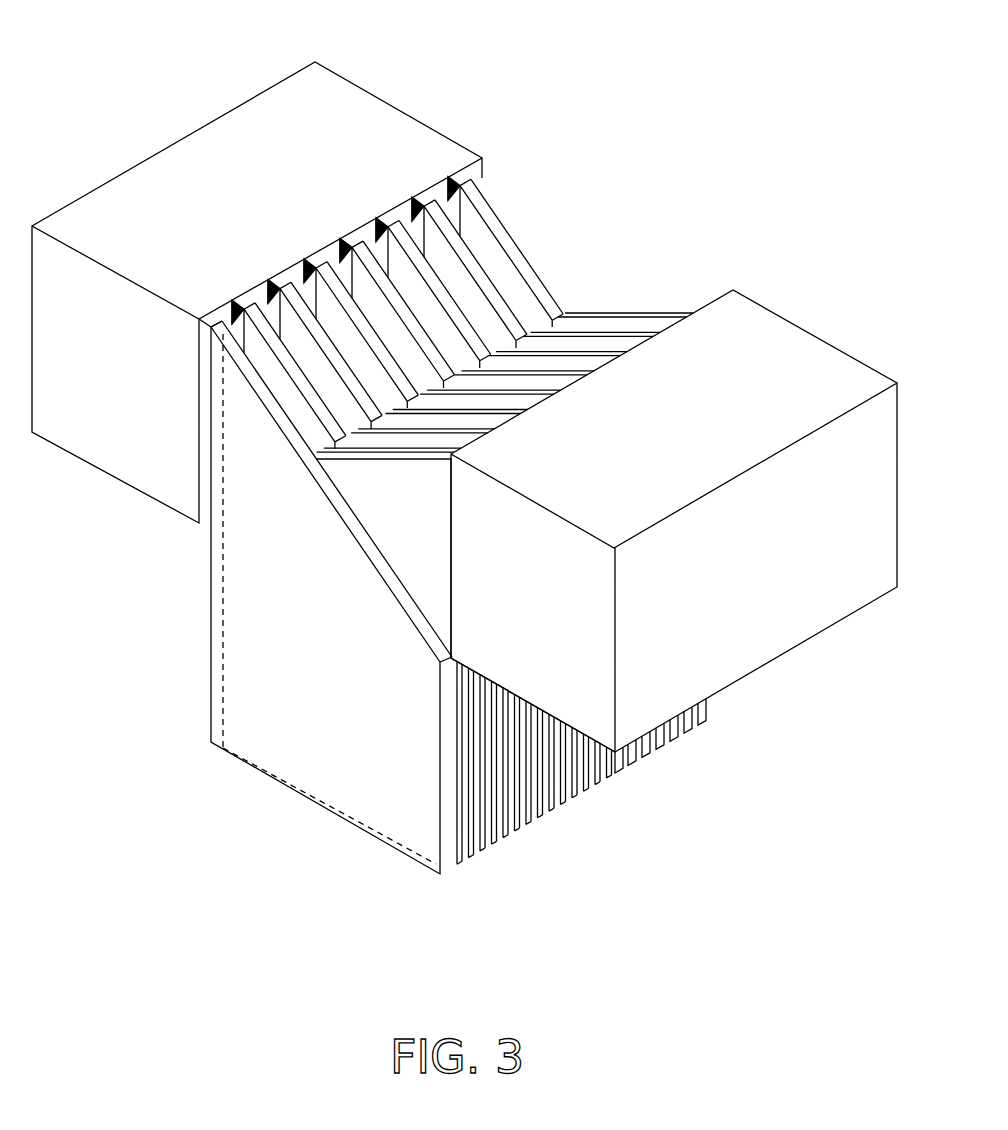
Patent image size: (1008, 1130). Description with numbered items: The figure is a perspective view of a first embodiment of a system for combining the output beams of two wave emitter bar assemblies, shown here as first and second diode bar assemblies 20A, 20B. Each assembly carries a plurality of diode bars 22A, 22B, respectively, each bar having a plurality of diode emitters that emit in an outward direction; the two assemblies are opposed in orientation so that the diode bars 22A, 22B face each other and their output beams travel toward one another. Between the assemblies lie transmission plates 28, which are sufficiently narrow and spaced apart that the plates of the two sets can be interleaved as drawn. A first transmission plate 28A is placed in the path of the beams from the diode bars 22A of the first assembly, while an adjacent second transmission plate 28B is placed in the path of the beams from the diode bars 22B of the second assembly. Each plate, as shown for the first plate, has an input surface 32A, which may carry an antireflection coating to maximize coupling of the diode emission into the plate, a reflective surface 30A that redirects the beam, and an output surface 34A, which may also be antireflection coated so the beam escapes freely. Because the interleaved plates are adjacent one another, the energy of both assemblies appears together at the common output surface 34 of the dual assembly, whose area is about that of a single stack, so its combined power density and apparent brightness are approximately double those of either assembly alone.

The first diode bar assembly 20A is at (318, 62).
The second diode bar assembly 20B is at (823, 333).
The diode bars of the first diode bar assembly 22A is at (228, 325).
The diode bars of the second diode bar assembly 22B is at (451, 503).
The transmission plates 28 is at (500, 256).
The first transmission plate 28A is at (240, 652).
The second transmission plate 28B is at (382, 530).
The reflective surface 30A is at (333, 505).
The input surface 32A is at (205, 425).
The output surface of the dual assembly 34 is at (712, 740).
The output surface 34A is at (300, 790).